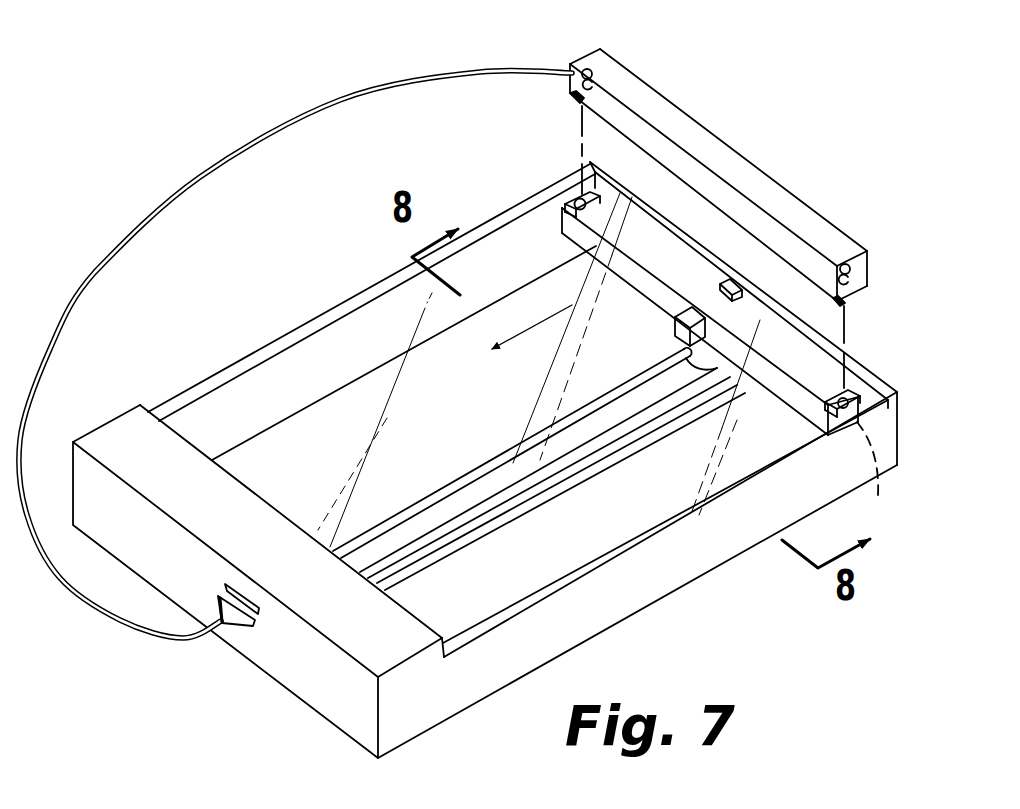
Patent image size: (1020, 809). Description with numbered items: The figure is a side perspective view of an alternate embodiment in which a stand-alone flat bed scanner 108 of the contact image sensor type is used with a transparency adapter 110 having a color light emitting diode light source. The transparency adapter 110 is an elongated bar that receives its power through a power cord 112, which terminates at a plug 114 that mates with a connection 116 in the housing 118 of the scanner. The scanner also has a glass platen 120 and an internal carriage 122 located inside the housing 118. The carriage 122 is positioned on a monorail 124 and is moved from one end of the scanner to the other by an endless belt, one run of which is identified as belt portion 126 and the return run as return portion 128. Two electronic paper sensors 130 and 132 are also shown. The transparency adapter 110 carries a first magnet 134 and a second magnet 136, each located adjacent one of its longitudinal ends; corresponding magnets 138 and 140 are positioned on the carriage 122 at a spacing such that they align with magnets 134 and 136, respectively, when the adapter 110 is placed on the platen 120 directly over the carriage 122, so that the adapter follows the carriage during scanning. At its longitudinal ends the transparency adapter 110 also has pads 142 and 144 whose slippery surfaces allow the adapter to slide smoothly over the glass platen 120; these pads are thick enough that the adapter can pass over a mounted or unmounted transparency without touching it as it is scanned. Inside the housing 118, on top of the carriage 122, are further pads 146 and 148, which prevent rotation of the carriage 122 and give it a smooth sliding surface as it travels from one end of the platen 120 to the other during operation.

The flat bed scanner 108 is at (485, 467).
The transparency adapter 110 is at (683, 101).
The power cord 112 is at (344, 93).
The plug 114 is at (253, 628).
The connection 116 is at (222, 584).
The housing 118 is at (298, 707).
The platen 120 is at (357, 347).
The carriage 122 is at (678, 332).
The monorail 124 is at (525, 445).
The endless belt 126 is at (545, 483).
The return portion of the belt 128 is at (597, 438).
The electronic paper sensor 130 is at (690, 352).
The electronic paper sensor 132 is at (735, 289).
The first magnet 134 is at (575, 62).
The second magnet 136 is at (848, 280).
The magnet 138 is at (565, 238).
The magnet 140 is at (875, 473).
The pad 142 is at (571, 99).
The pad 144 is at (858, 292).
The pad 146 is at (575, 200).
The pad 148 is at (833, 395).